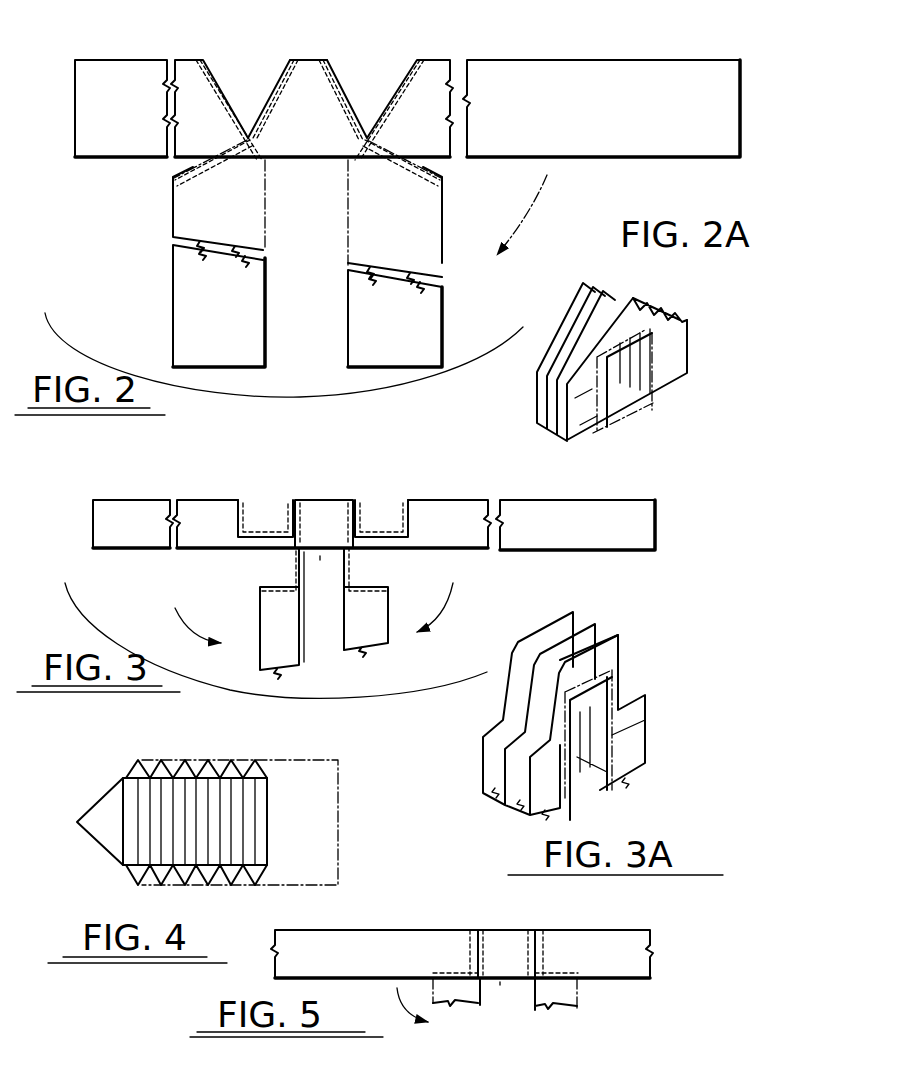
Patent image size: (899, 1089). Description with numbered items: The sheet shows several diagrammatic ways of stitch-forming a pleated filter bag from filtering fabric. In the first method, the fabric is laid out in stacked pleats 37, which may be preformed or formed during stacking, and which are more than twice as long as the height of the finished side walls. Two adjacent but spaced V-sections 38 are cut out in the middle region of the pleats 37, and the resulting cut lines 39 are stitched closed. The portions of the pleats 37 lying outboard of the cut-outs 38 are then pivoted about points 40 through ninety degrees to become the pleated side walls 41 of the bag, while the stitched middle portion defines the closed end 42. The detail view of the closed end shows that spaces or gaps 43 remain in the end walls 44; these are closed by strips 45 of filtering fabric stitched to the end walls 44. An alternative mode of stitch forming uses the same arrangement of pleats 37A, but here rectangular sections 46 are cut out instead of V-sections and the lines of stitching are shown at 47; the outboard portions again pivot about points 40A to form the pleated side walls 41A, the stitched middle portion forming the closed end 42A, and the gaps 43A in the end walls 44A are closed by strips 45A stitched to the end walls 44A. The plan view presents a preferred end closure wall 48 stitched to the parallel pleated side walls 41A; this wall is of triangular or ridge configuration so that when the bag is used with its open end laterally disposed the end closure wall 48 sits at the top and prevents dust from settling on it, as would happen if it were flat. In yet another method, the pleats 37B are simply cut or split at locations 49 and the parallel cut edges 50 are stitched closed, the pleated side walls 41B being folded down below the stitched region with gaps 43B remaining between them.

In FIG. 2, the stacked pleats 37 is at (135, 82).
In FIG. 2, the V-section cut-outs 38 is at (233, 79).
In FIG. 2, the cut lines 39 is at (205, 62).
In FIG. 2, the pivot points 40 is at (248, 132).
In FIG. 2, the pleated side walls 41 is at (199, 259).
In FIG. 2A, the pleated side walls 41 is at (691, 341).
In FIG. 2, the closed end 42 is at (317, 56).
In FIG. 2A, the closed end 42 is at (682, 270).
In FIG. 2, the spaces or gaps 43 is at (309, 302).
In FIG. 2A, the spaces or gaps 43 is at (627, 401).
In FIG. 2A, the end walls 44 is at (663, 372).
In FIG. 2A, the strips of filtering fabric 45 is at (593, 433).
In FIG. 3, the rectangular sections 46 is at (256, 510).
In FIG. 3, the lines of stitching 47 is at (408, 522).
In FIG. 3, the pivot points 40A is at (252, 530).
In FIG. 3, the pleated side walls 41A is at (285, 633).
In FIG. 3A, the pleated side walls 41A is at (657, 702).
In FIG. 4, the pleated side walls 41A is at (239, 760).
In FIG. 3, the closed end 42A is at (334, 496).
In FIG. 3A, the closed end 42A is at (622, 632).
In FIG. 4, the closed end 42A is at (269, 822).
In FIG. 3, the spaces or gaps 43A is at (324, 614).
In FIG. 3A, the spaces or gaps 43A is at (602, 783).
In FIG. 3A, the end walls 44A is at (645, 765).
In FIG. 3A, the strips of filtering fabric 45A is at (612, 735).
In FIG. 3, the stacked pleats 37A is at (570, 528).
In FIG. 4, the end closure wall 48 is at (105, 793).
In FIG. 5, the cut or split locations 49 is at (482, 940).
In FIG. 5, the parallel cut edges 50 is at (457, 972).
In FIG. 5, the pleats 37B is at (598, 953).
In FIG. 5, the pleated side walls 41B is at (565, 995).
In FIG. 5, the spaces or gaps 43B is at (502, 992).